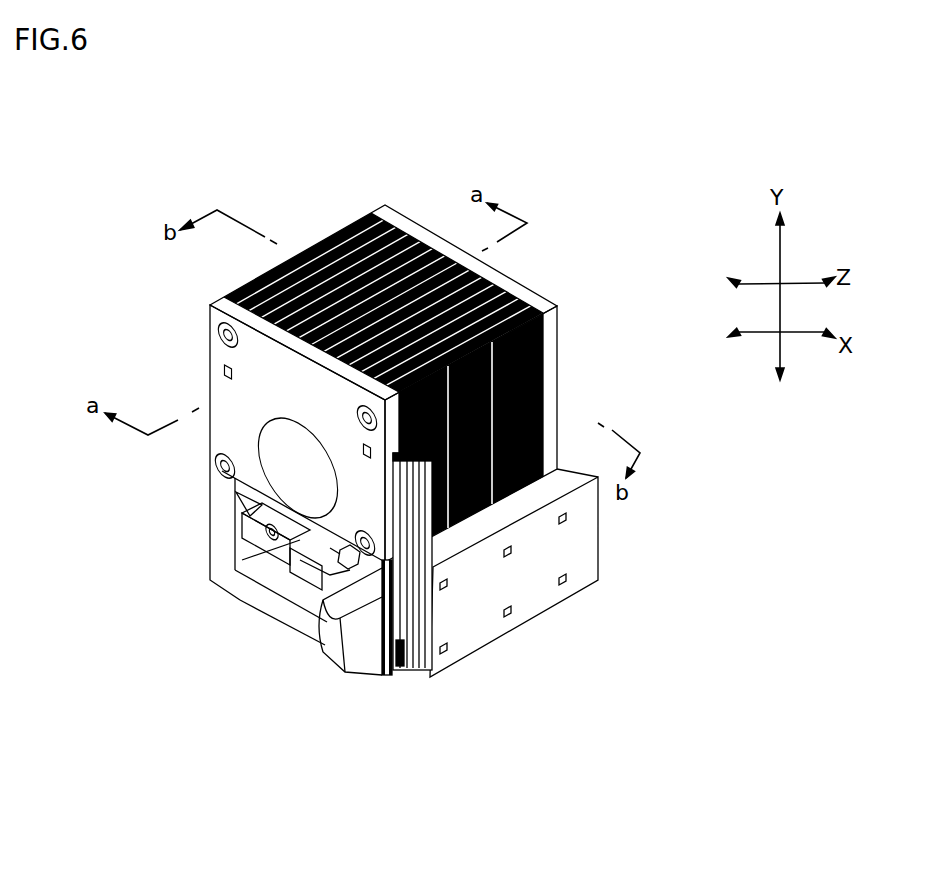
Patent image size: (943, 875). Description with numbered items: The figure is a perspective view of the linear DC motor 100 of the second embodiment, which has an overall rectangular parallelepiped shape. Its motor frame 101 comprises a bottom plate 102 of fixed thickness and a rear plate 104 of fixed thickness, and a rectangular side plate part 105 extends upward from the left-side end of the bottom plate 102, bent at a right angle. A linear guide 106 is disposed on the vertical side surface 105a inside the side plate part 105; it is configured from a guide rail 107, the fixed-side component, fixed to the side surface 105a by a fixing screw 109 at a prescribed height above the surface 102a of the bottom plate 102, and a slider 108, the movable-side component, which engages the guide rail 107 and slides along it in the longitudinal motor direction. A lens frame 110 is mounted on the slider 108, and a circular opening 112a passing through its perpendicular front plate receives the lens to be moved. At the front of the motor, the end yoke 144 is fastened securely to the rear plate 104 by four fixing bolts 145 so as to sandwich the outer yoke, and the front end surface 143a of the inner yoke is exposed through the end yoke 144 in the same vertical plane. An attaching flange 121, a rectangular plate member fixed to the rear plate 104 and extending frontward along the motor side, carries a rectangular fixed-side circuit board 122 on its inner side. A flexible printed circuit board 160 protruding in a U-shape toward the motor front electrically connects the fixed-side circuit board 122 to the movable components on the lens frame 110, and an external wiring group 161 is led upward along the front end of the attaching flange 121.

The linear DC motor 100 is at (527, 260).
The motor frame 101 is at (570, 398).
The rear plate 104 is at (553, 345).
The fixing bolts 145 is at (220, 337).
The end yoke 144 is at (220, 390).
The front end surface of the inner yoke 143a is at (266, 446).
The side plate part 105 is at (220, 516).
The vertical side surface 105a is at (245, 502).
The fixing screw 109 is at (272, 533).
The linear guide 106 is at (120, 572).
The guide rail 107 is at (242, 543).
The slider 108 is at (282, 587).
The bottom plate 102 is at (272, 607).
The surface of the bottom plate 102a is at (297, 547).
The lens frame 110 is at (314, 580).
The circular opening 112a is at (345, 556).
The flexible printed circuit board 160 is at (338, 640).
The fixed-side circuit board 122 is at (373, 654).
The external wiring group 161 is at (410, 580).
The attaching flange 121 is at (540, 584).